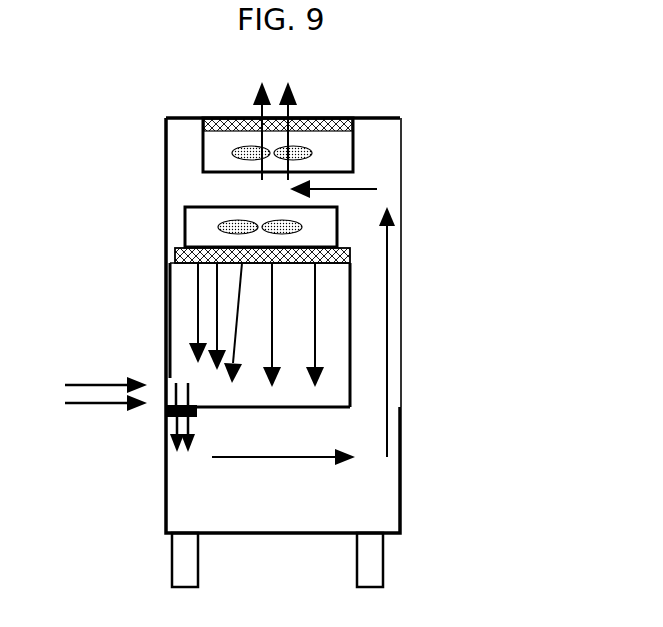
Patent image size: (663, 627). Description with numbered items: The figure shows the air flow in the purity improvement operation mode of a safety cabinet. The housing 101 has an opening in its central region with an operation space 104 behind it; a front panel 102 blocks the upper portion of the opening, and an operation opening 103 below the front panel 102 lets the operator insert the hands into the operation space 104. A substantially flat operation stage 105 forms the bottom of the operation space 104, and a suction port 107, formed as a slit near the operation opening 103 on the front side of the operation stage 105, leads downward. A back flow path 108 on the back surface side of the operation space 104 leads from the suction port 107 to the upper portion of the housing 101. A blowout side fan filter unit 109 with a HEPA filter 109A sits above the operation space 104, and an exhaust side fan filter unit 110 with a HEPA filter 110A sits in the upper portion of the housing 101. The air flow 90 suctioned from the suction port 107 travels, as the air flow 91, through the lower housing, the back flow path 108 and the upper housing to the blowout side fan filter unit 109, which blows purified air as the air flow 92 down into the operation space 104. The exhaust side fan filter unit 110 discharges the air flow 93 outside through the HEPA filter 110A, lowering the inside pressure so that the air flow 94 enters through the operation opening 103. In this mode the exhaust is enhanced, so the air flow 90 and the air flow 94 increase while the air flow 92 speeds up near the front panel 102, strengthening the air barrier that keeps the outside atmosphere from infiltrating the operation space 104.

The housing 101 is at (382, 117).
The exhaust side fan filter unit 110 is at (202, 158).
The HEPA filter 110A is at (203, 118).
The air flow 93 is at (257, 131).
The blowout side fan filter unit 109 is at (338, 232).
The HEPA filter 109A is at (350, 248).
The front panel 102 is at (168, 325).
The operation space 104 is at (310, 337).
The operation stage 105 is at (320, 405).
The back flow path 108 is at (387, 343).
The air flow 92 is at (256, 325).
The air flow 91 is at (303, 331).
The operation opening 103 is at (167, 387).
The suction port 107 is at (167, 413).
The air flow 90 is at (185, 453).
The air flow 94 is at (106, 407).